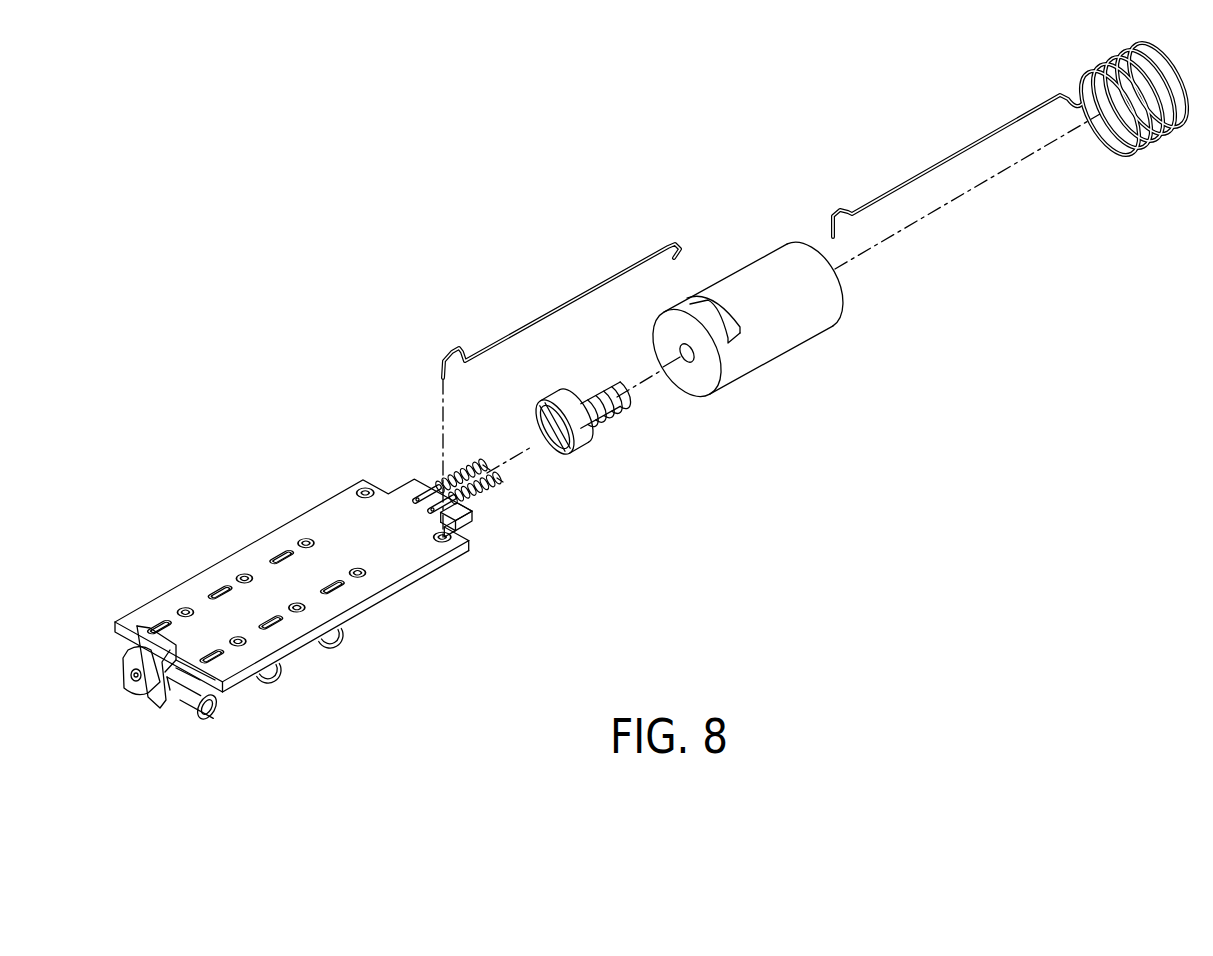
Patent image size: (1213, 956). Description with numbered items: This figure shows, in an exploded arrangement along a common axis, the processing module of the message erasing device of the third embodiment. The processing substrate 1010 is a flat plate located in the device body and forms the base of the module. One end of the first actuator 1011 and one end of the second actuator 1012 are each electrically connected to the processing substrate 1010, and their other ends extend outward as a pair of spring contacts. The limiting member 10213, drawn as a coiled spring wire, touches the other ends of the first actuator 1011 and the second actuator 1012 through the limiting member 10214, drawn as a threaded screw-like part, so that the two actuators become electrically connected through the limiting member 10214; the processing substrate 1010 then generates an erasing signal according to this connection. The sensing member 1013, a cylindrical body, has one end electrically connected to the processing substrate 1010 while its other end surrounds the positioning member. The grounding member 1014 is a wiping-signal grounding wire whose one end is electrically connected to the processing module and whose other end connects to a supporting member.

The processing substrate 1010 is at (243, 560).
The first actuator 1011 is at (490, 492).
The second actuator 1012 is at (465, 463).
The sensing member 1013 is at (750, 278).
The grounding member 1014 is at (557, 307).
The limiting member 10213 is at (977, 142).
The limiting member 10214 is at (590, 430).